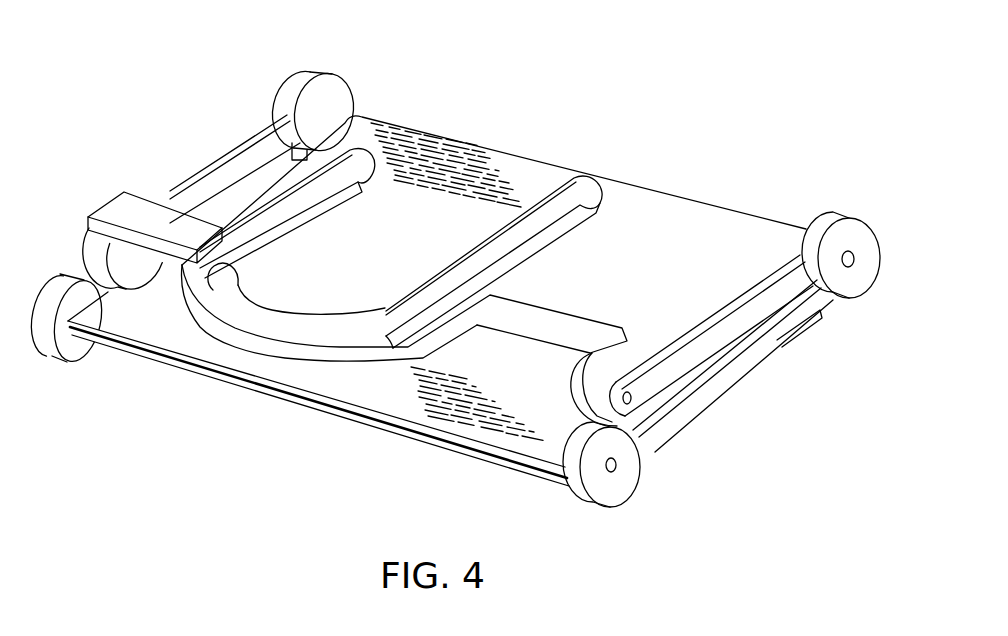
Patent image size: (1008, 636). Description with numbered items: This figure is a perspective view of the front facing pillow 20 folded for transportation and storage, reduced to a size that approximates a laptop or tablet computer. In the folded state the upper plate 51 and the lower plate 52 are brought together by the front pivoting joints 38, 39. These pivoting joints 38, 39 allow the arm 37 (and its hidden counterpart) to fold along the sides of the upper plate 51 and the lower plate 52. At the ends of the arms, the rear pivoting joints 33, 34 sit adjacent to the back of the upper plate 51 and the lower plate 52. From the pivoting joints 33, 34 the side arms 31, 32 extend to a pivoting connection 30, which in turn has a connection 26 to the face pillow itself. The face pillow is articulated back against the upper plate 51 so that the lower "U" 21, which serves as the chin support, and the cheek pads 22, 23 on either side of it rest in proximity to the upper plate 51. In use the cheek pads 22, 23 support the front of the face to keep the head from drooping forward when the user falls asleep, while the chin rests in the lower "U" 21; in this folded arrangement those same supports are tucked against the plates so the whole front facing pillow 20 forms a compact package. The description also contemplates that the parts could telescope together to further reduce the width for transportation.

The front facing pillow 20 is at (630, 100).
The lower "U" 21 is at (332, 325).
The cheek pad 22 is at (295, 183).
The cheek pad 23 is at (565, 178).
The connection 26 is at (147, 193).
The pivoting connection 30 is at (88, 237).
The side arm 31 is at (773, 268).
The side arm 32 is at (247, 140).
The rear pivoting joint 33 is at (820, 218).
The rear pivoting joint 34 is at (340, 75).
The arm 37 is at (760, 365).
The front pivoting joint 38 is at (80, 363).
The front pivoting joint 39 is at (570, 482).
The upper plate 51 is at (437, 130).
The lower plate 52 is at (217, 382).